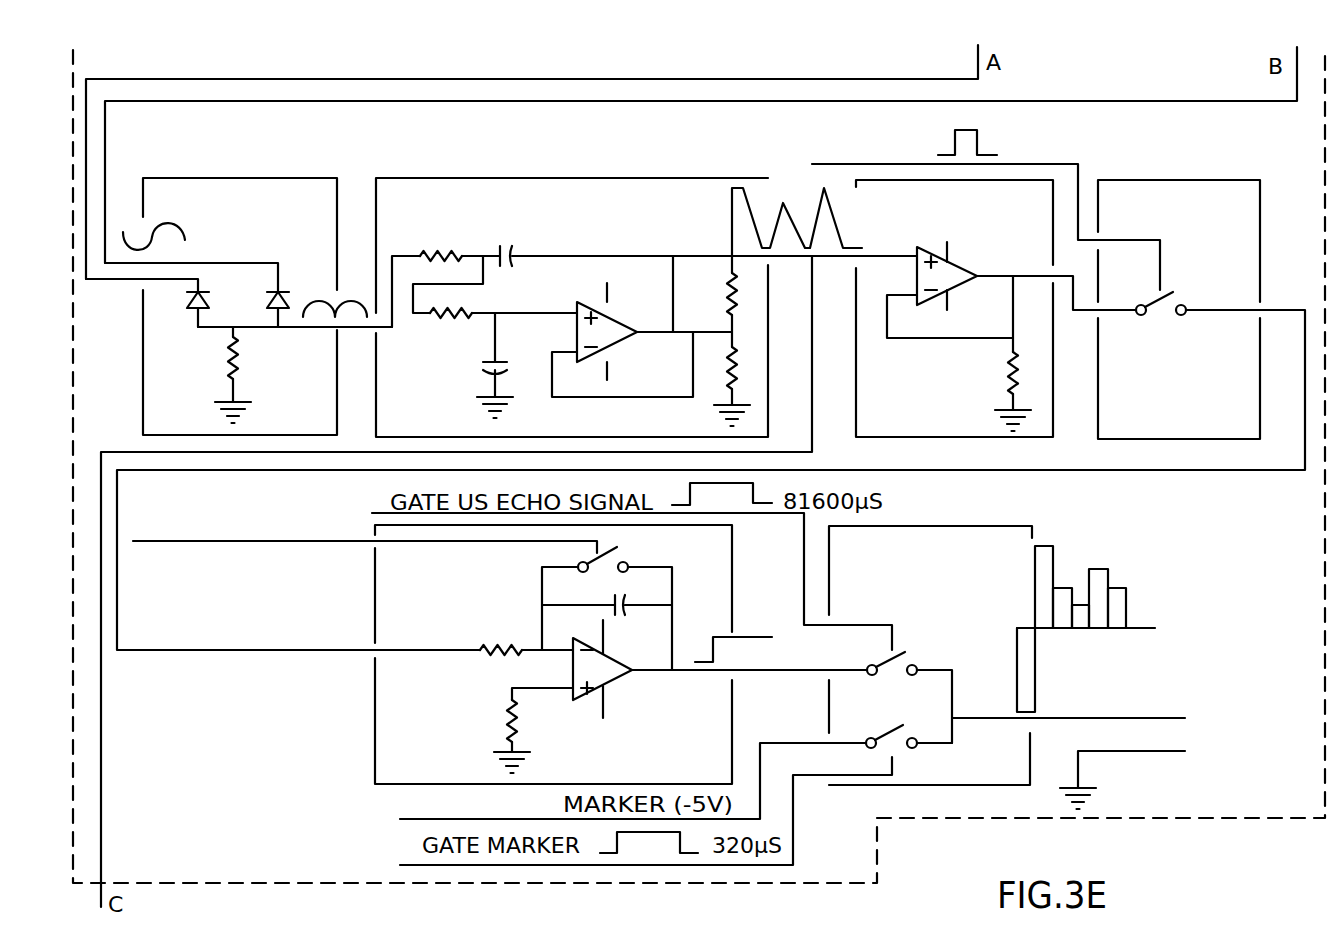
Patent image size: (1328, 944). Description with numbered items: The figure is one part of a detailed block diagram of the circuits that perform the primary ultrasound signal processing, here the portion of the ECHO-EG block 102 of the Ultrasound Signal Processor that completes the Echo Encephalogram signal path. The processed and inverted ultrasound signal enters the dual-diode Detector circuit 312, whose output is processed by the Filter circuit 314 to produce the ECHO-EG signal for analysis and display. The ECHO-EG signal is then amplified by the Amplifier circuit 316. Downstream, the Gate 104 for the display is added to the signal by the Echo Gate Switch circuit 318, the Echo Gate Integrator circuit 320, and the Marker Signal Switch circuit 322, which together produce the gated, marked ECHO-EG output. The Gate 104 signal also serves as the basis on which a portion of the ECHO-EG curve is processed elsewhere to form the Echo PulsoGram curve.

The ECHO-EG block 102 is at (1169, 820).
The Gate 104 is at (808, 152).
The dual-diode Detector circuit 312 is at (173, 178).
The Filter circuit 314 is at (563, 178).
The Amplifier circuit 316 is at (1053, 193).
The Echo Gate Switch circuit 318 is at (1262, 232).
The Echo Gate Integrator circuit 320 is at (375, 748).
The Marker Signal Switch circuit 322 is at (1012, 523).